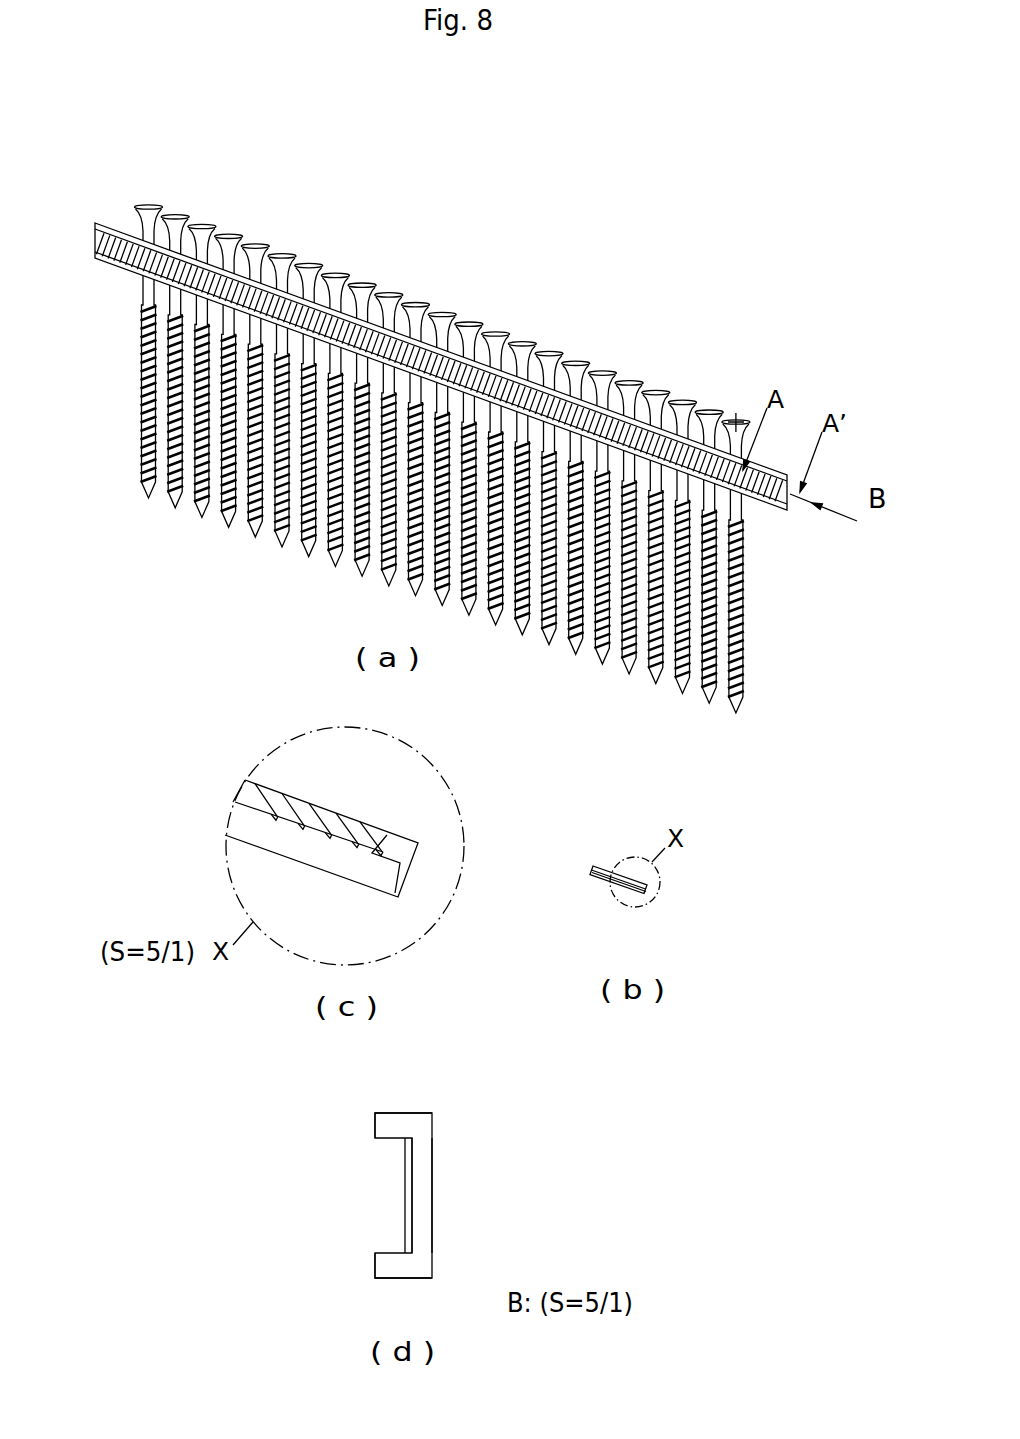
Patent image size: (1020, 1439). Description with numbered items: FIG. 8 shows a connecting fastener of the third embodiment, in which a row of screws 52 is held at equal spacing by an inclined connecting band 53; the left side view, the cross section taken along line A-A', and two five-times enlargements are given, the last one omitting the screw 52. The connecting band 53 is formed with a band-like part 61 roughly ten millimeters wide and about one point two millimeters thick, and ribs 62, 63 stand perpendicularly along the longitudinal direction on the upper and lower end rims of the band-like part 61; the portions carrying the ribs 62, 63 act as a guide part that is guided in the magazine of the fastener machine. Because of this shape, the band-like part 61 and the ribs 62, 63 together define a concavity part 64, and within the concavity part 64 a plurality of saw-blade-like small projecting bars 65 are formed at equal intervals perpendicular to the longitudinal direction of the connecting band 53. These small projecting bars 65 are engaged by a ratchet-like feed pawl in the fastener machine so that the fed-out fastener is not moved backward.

The screw 52 is at (742, 677).
The connecting band 53 is at (765, 504).
The band-like part 61 is at (103, 240).
The rib 62 is at (110, 229).
The rib 63 is at (112, 263).
The concavity part 64 is at (397, 1188).
The small projecting bar 65 is at (383, 851).